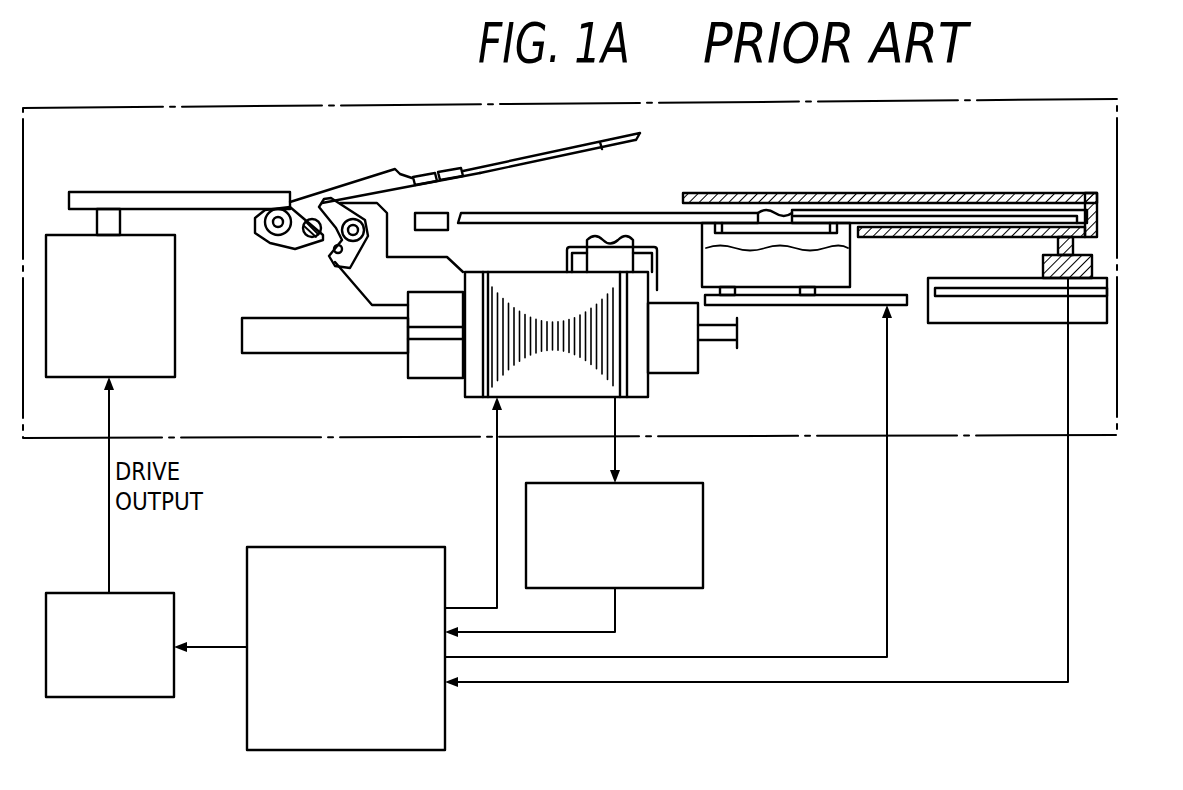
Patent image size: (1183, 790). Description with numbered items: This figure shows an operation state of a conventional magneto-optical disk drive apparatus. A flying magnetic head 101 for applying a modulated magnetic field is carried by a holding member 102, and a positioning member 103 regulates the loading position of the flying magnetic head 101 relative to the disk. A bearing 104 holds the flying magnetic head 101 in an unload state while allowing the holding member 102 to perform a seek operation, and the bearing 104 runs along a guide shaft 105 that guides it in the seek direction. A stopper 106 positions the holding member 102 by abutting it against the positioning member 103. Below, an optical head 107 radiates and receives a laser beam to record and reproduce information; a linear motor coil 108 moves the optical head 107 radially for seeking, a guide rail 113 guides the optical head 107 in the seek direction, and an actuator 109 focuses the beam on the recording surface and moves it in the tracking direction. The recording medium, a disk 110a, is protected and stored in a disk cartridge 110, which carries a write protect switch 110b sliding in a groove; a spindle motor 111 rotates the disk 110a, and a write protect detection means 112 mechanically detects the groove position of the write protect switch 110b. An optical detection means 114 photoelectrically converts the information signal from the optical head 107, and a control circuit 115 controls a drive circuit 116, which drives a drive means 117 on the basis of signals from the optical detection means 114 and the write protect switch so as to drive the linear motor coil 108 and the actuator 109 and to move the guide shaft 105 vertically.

The flying magnetic head 101 is at (562, 155).
The holding member 102 is at (395, 168).
The positioning member 103 is at (321, 202).
The bearing 104 is at (297, 212).
The guide shaft 105 is at (197, 198).
The stopper 106 is at (313, 238).
The optical head 107 is at (417, 364).
The linear motor coil 108 is at (605, 380).
The actuator 109 is at (613, 258).
The disk cartridge 110 is at (905, 195).
The disk 110a is at (548, 202).
The write protect switch 110b is at (1058, 232).
The spindle motor 111 is at (833, 272).
The write protect detection means 112 is at (1093, 265).
The guide rail 113 is at (305, 340).
The optical detection means 114 is at (703, 512).
The control circuit 115 is at (387, 546).
The drive circuit 116 is at (150, 593).
The drive means 117 is at (157, 377).